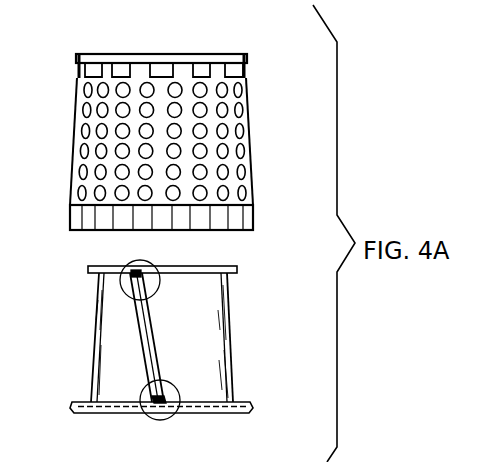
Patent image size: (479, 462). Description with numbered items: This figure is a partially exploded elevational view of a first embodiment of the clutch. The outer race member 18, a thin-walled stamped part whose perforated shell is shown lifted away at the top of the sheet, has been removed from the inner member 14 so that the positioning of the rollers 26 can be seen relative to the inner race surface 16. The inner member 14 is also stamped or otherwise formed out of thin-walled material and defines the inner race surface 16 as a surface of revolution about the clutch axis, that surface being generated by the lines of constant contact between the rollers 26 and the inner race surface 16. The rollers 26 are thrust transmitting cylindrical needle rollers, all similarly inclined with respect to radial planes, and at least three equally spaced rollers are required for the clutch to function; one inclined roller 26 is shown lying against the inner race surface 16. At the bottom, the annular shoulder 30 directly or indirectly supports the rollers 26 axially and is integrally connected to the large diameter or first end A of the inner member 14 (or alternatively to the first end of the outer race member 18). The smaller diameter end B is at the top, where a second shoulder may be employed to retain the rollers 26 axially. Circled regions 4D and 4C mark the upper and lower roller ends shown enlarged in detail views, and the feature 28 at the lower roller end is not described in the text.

The inner member 14 is at (110, 266).
The inner race surface 16 is at (190, 335).
The outer race member 18 is at (210, 148).
The rollers 26 is at (150, 365).
The tube end joint 28 is at (170, 413).
The annular shoulder 30 is at (250, 407).
The detail circle 4D is at (150, 262).
The detail circle 4C is at (160, 420).
The first end A is at (68, 412).
The second end B is at (245, 260).